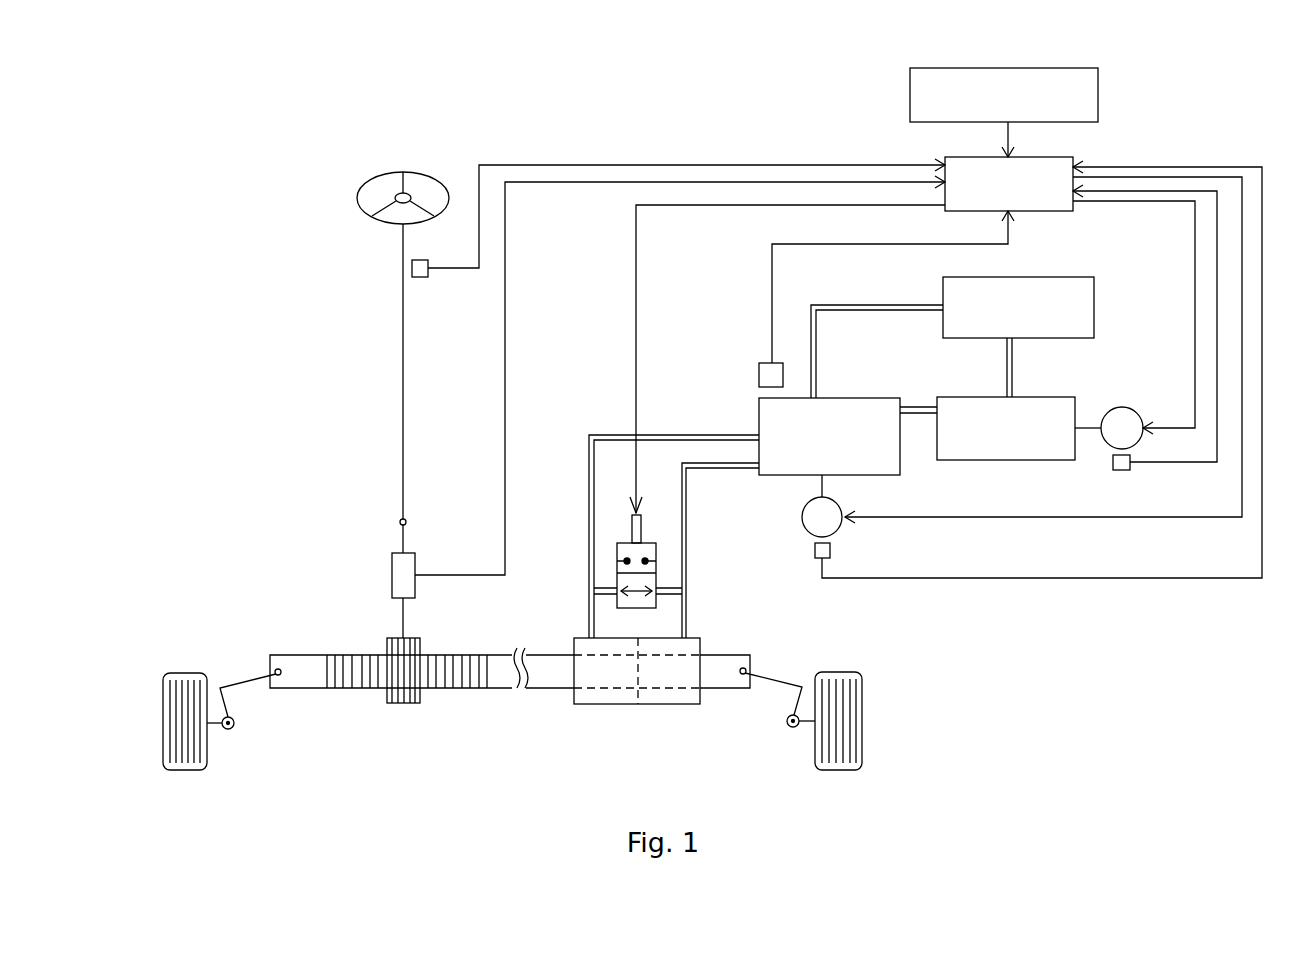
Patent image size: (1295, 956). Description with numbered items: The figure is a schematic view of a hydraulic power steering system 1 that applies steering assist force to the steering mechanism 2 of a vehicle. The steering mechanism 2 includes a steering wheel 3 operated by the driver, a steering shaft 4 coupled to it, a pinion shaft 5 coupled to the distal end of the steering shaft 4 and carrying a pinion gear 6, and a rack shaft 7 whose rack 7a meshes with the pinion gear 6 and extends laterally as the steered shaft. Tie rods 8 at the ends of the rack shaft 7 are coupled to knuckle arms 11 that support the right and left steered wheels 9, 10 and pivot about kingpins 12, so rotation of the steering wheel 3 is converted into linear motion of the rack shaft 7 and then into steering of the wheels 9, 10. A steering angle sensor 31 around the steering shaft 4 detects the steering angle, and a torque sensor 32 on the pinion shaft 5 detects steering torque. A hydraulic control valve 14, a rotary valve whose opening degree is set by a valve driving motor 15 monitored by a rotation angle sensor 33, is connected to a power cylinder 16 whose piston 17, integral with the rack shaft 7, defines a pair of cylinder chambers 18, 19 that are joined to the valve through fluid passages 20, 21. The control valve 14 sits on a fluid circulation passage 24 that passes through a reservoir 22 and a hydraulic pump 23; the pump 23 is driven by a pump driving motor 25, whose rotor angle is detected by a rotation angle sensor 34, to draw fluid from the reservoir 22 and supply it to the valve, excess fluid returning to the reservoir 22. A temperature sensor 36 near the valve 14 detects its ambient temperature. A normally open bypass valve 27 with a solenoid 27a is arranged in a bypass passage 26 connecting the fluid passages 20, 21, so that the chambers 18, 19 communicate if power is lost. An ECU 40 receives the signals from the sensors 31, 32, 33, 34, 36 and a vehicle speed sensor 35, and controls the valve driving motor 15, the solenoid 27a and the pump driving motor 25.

The hydraulic power steering system 1 is at (290, 152).
The steering mechanism 2 is at (541, 693).
The steering wheel 3 is at (357, 198).
The steering shaft 4 is at (403, 352).
The pinion shaft 5 is at (408, 524).
The pinion gear 6 is at (406, 703).
The rack shaft 7 is at (492, 690).
The rack 7a is at (355, 688).
The tie rods 8 is at (252, 688).
The left steered wheel 9 is at (183, 770).
The right steered wheel 10 is at (838, 770).
The knuckle arms 11 is at (226, 730).
The kingpins 12 is at (233, 728).
The hydraulic control valve 14 is at (882, 398).
The valve driving motor 15 is at (802, 517).
The power cylinder 16 is at (690, 638).
The piston 17 is at (645, 680).
The cylinder chamber 18 is at (600, 704).
The cylinder chamber 19 is at (680, 704).
The fluid passage 20 is at (589, 468).
The fluid passage 21 is at (686, 488).
The reservoir 22 is at (1052, 277).
The hydraulic pump 23 is at (1055, 397).
The fluid circulation passage 24 is at (816, 334).
The pump driving motor 25 is at (1122, 407).
The bypass passage 26 is at (594, 590).
The bypass valve 27 is at (617, 548).
The solenoid 27a is at (641, 528).
The steering angle sensor 31 is at (420, 278).
The torque sensor 32 is at (392, 578).
The rotation angle sensor 33 is at (815, 552).
The rotation angle sensor 34 is at (1122, 470).
The vehicle speed sensor 35 is at (1045, 68).
The temperature sensor 36 is at (759, 378).
The ECU 40 is at (1055, 157).